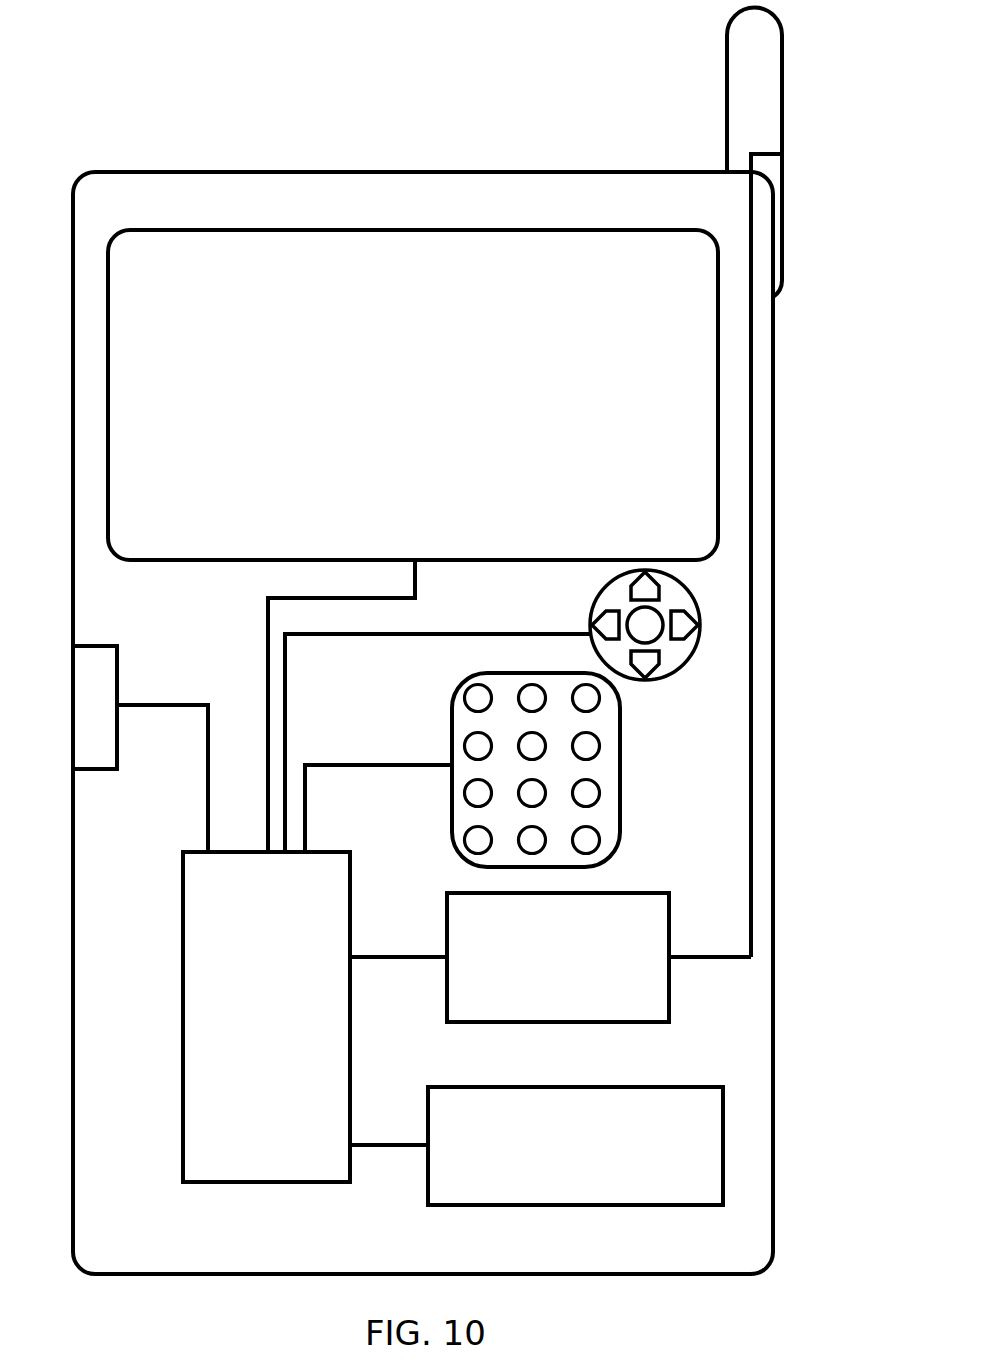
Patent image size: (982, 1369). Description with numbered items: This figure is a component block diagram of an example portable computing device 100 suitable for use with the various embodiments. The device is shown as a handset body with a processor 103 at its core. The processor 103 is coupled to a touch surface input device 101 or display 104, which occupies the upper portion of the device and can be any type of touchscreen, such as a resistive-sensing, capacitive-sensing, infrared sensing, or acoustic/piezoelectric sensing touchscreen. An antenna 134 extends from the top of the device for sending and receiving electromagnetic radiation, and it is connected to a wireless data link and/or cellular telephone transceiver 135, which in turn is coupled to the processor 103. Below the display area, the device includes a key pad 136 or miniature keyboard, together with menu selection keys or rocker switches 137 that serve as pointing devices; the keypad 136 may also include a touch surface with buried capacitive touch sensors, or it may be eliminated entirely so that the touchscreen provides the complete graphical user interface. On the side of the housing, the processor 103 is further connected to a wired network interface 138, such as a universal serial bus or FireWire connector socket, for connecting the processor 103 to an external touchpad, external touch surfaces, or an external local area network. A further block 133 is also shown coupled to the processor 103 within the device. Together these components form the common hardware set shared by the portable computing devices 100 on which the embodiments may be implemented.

The portable computing device 100 is at (367, 172).
The touch surface input device 101 is at (223, 230).
The display 104 is at (413, 338).
The antenna 134 is at (727, 42).
The wired network interface 138 is at (117, 656).
The rocker switches 137 is at (645, 680).
The key pad 136 is at (620, 797).
The processor 103 is at (254, 1027).
The cellular telephone transceiver 135 is at (540, 970).
The memory 133 is at (559, 1157).